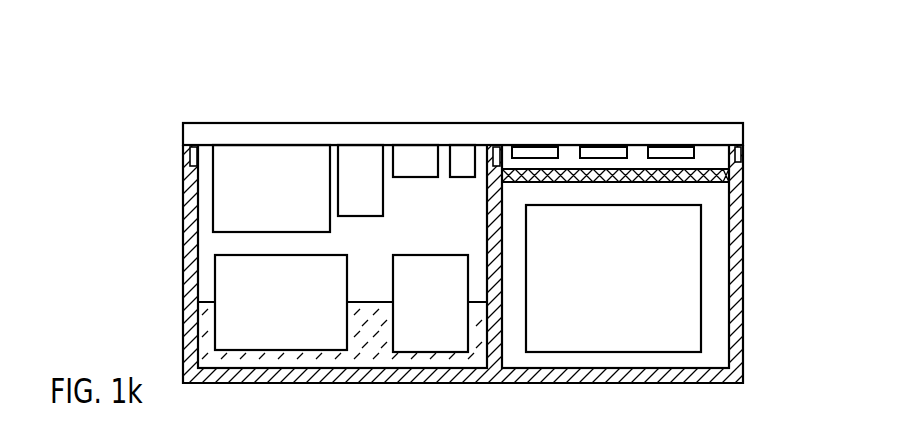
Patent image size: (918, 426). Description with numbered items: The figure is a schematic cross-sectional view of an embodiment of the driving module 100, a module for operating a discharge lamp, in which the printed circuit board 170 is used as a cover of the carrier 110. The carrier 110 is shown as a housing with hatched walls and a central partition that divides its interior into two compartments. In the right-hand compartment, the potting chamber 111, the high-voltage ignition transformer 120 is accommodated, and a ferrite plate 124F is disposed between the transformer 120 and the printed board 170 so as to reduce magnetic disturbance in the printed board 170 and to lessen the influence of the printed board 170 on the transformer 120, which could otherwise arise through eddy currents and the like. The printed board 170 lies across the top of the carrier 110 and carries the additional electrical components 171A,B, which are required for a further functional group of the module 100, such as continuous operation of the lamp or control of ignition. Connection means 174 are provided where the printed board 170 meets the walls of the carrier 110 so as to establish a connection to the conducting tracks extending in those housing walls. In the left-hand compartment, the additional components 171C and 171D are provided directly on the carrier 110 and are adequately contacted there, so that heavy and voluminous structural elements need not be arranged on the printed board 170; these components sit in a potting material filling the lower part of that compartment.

The driving module 100 is at (768, 72).
The carrier 110 is at (749, 284).
The potting chamber 111 is at (688, 195).
The ignition transformer 120 is at (620, 275).
The ferrite plate 124F is at (681, 167).
The printed circuit board 170 is at (416, 119).
The additional electrical components 171A,B is at (279, 178).
The additional component 171C is at (305, 317).
The additional component 171D is at (452, 317).
The connection means 174 is at (186, 156).